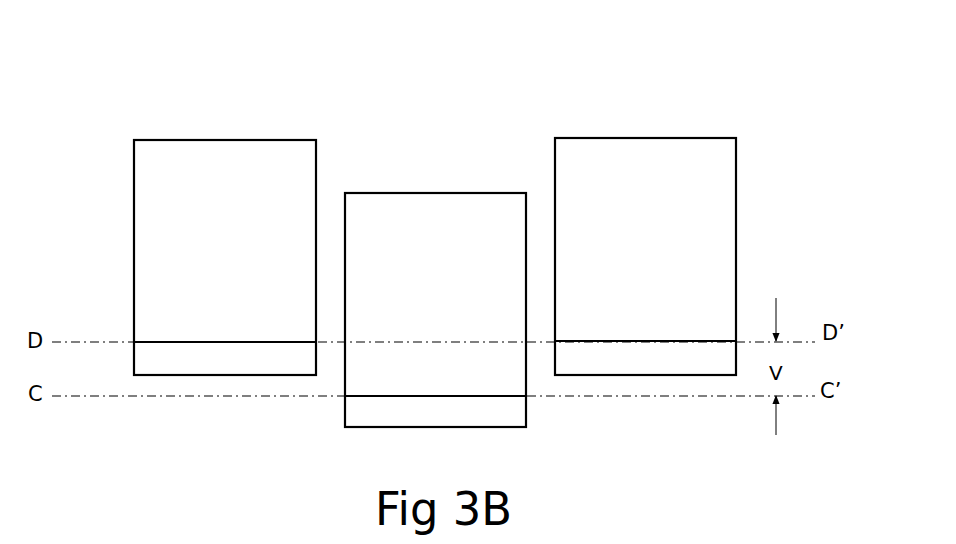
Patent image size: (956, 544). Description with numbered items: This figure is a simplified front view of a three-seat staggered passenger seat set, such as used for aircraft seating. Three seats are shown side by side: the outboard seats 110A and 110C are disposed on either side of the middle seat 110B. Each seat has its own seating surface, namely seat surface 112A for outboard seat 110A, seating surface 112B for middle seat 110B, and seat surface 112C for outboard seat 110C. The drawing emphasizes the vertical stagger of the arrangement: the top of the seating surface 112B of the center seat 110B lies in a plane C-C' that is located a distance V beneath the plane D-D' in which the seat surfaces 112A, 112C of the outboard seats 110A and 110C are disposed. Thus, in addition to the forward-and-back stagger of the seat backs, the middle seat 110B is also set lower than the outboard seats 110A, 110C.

The outboard seat 110A is at (670, 137).
The middle seat 110B is at (442, 192).
The outboard seat 110C is at (222, 139).
The seat surface 112A is at (637, 340).
The seating surface 112B is at (435, 395).
The seat surface 112C is at (228, 341).